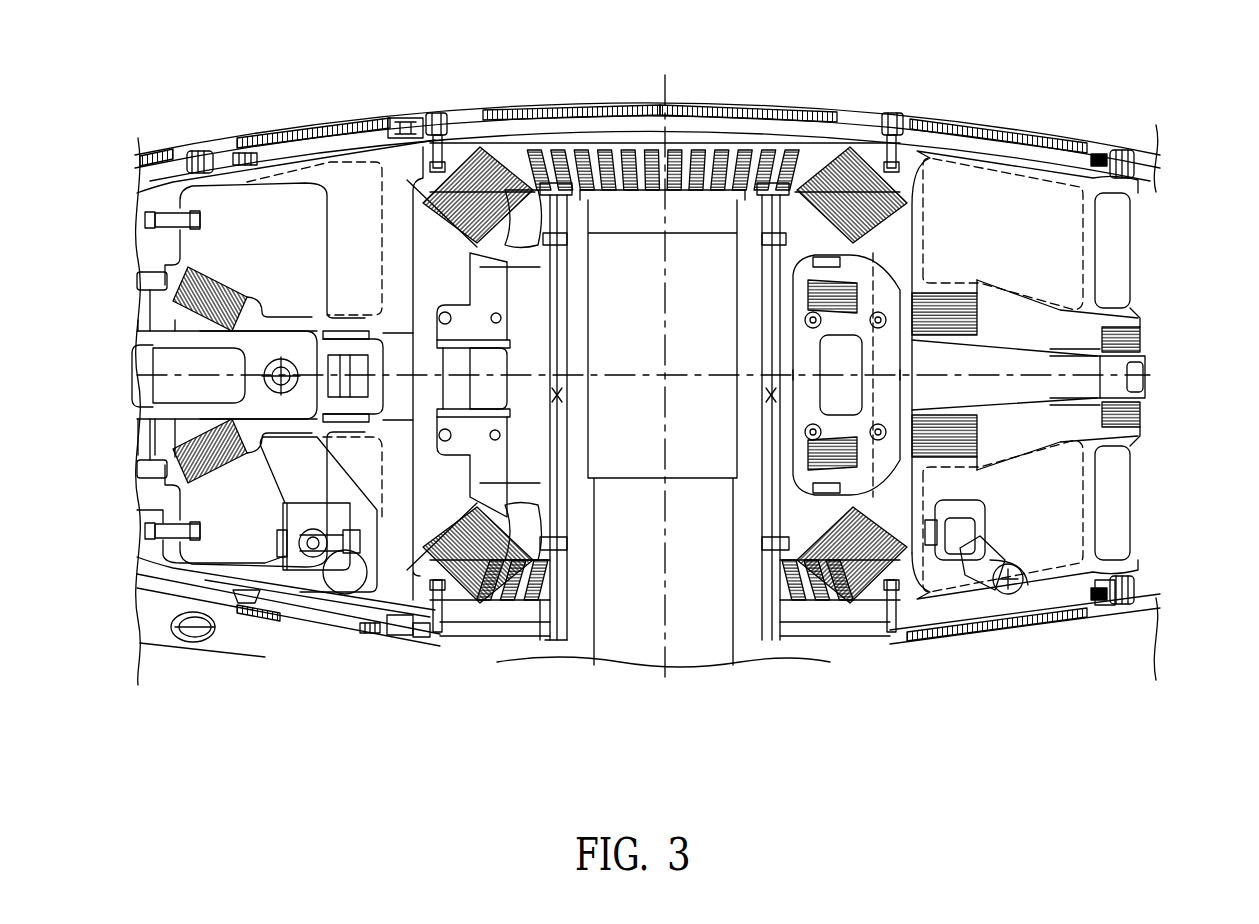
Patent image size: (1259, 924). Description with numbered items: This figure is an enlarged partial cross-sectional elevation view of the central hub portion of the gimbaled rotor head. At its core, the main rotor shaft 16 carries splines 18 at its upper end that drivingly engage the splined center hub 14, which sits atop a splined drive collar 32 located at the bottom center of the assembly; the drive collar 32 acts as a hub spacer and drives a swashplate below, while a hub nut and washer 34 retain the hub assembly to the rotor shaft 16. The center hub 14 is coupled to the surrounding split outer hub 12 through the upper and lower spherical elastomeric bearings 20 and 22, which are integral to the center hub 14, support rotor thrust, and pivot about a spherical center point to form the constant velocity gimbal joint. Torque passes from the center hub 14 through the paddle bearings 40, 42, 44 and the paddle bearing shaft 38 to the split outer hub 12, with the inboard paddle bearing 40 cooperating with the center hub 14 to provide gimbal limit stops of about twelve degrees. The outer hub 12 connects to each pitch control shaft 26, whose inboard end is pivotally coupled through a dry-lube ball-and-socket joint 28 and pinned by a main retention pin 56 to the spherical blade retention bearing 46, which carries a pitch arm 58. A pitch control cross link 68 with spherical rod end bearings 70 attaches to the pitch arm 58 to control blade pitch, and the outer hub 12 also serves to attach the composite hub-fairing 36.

The split outer hub 12 is at (400, 282).
The splined center hub 14 is at (537, 463).
The main rotor shaft 16 is at (582, 647).
The splines 18 is at (567, 420).
The upper spherical elastomeric bearing 20 is at (422, 182).
The lower spherical elastomeric bearing 22 is at (447, 534).
The pitch control shaft 26 is at (155, 412).
The dry-lube ball-and-socket joint 28 is at (357, 331).
The splined drive collar 32 is at (543, 633).
The hub nut and washer 34 is at (556, 140).
The hub-fairing 36 is at (762, 103).
The paddle bearing shaft 38 is at (1047, 357).
The paddle bearing 40 is at (878, 252).
The paddle bearing 42 is at (962, 300).
The paddle bearing 44 is at (1147, 333).
The spherical blade retention bearing 46 is at (212, 283).
The main retention pin 56 is at (283, 358).
The pitch arm 58 is at (273, 480).
The pitch control cross link 68 is at (363, 577).
The spherical rod end bearing 70 is at (313, 563).